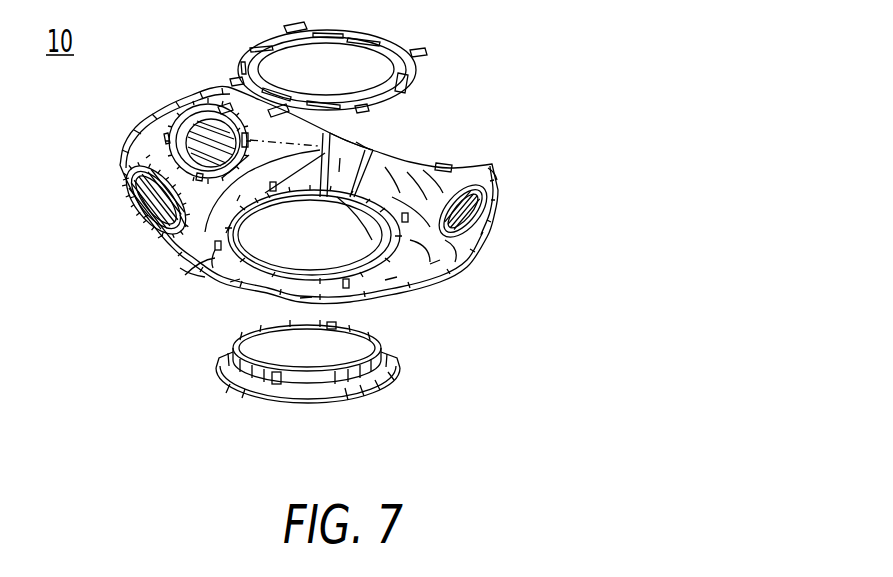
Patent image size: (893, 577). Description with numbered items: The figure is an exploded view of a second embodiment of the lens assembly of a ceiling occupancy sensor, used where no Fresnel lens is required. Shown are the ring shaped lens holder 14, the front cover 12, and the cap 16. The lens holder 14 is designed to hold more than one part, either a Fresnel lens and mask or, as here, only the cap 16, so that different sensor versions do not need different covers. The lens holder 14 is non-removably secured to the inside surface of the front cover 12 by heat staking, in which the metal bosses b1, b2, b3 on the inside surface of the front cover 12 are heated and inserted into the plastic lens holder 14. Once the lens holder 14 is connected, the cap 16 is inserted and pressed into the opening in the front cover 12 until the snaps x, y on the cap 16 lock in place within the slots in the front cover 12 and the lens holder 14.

The front cover 12 is at (500, 196).
The lens holder 14 is at (381, 75).
The cap 16 is at (333, 388).
The metal boss b1 is at (200, 272).
The metal boss b2 is at (406, 218).
The metal boss b3 is at (366, 138).
The snap x is at (272, 384).
The snap y is at (340, 325).